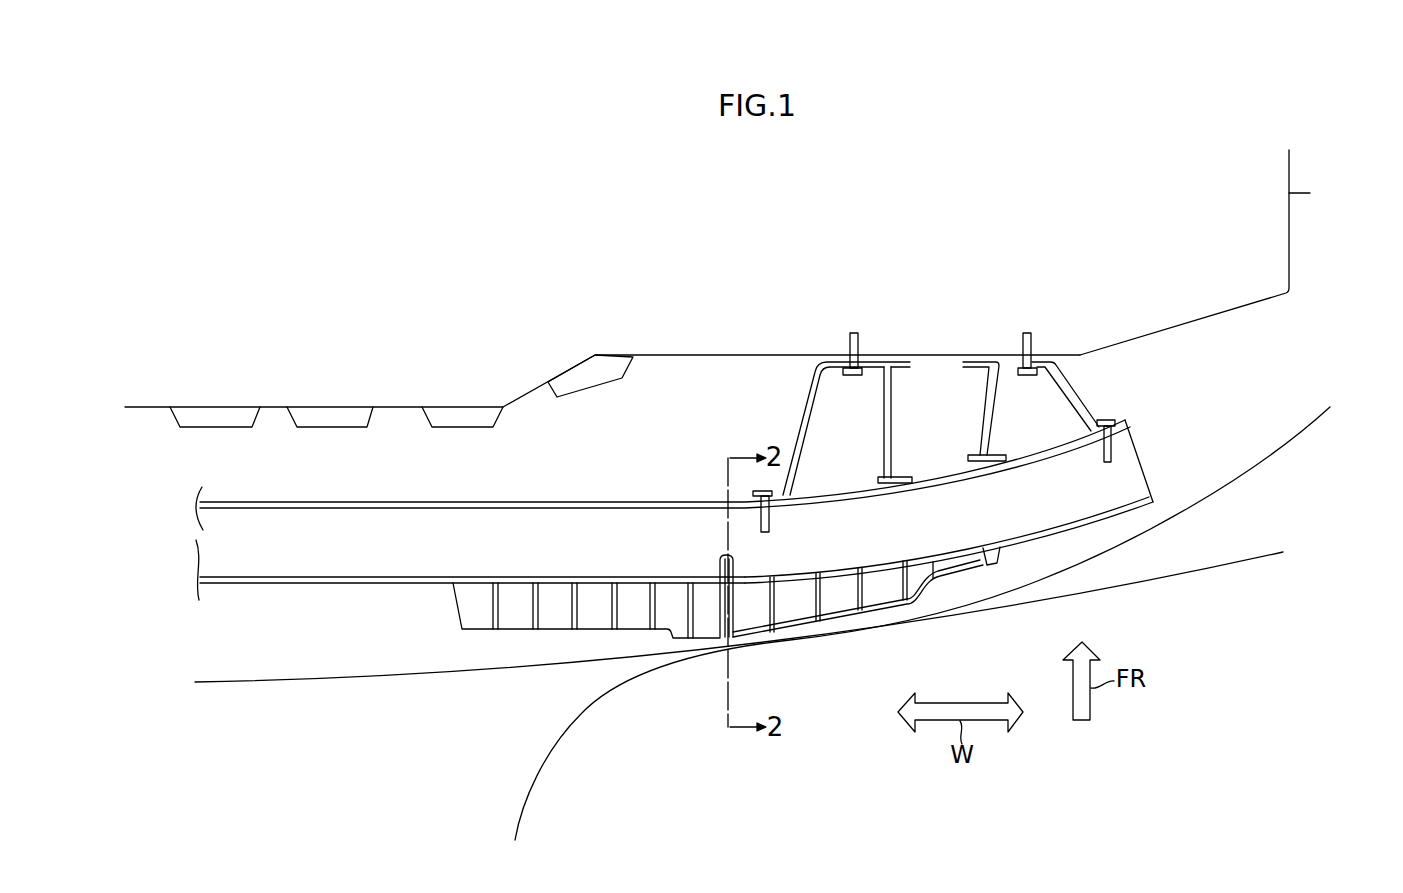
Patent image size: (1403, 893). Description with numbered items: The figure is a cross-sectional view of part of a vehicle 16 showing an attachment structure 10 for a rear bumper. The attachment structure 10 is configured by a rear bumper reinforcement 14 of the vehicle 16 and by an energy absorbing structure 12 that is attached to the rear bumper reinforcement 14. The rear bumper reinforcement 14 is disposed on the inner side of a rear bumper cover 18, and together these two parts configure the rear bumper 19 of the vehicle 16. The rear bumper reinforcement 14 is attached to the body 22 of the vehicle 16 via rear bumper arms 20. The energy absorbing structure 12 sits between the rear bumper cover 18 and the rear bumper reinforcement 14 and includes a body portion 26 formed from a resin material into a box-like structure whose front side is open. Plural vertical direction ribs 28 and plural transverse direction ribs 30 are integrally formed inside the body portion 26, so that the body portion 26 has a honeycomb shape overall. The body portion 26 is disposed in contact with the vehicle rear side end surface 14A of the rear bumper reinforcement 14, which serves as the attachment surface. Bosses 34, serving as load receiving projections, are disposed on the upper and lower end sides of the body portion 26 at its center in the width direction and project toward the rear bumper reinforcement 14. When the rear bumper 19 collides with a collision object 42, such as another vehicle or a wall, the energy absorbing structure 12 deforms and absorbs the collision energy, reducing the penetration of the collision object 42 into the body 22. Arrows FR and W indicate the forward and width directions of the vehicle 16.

The attachment structure 10 is at (1040, 567).
The energy absorbing structure 12 is at (522, 631).
The rear bumper reinforcement 14 is at (288, 560).
The vehicle rear side end surface 14A is at (413, 585).
The vehicle 16 is at (1296, 192).
The rear bumper cover 18 is at (345, 680).
The rear bumper 19 is at (263, 738).
The rear bumper arm 20 is at (1076, 392).
The body 22 is at (1291, 243).
The body portion 26 is at (797, 633).
The vertical direction rib 28 is at (613, 603).
The transverse direction rib 30 is at (840, 593).
The boss 34 is at (737, 570).
The collision object 42 is at (530, 790).